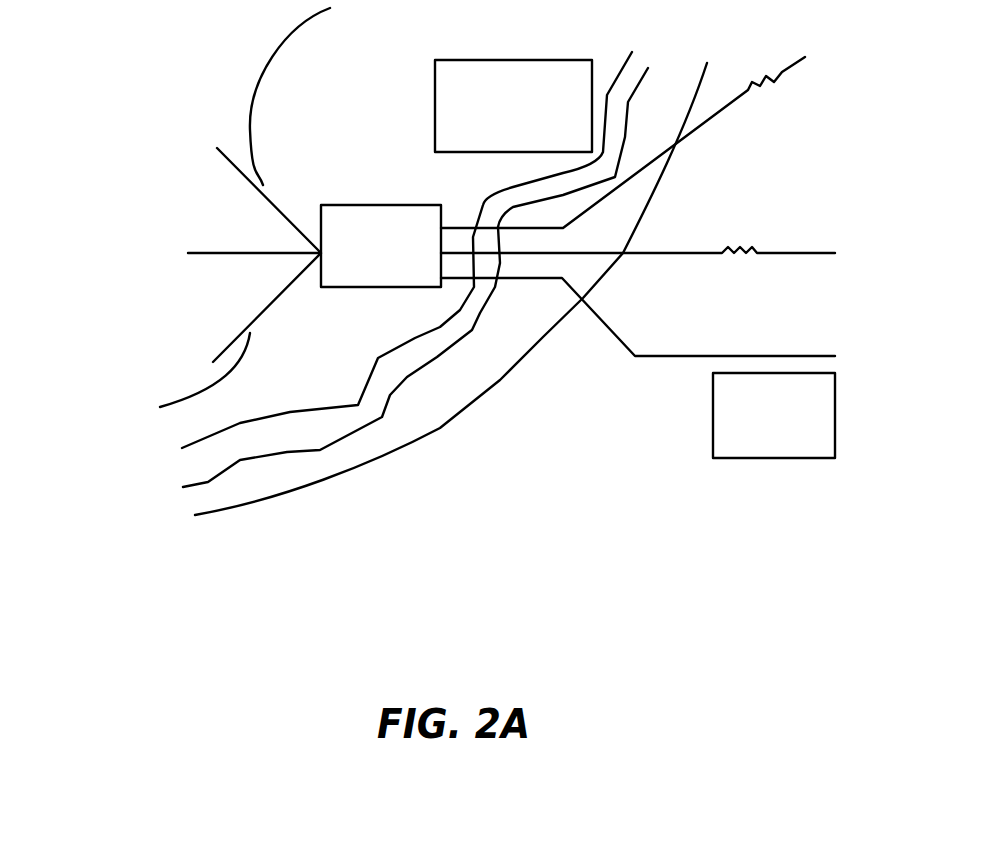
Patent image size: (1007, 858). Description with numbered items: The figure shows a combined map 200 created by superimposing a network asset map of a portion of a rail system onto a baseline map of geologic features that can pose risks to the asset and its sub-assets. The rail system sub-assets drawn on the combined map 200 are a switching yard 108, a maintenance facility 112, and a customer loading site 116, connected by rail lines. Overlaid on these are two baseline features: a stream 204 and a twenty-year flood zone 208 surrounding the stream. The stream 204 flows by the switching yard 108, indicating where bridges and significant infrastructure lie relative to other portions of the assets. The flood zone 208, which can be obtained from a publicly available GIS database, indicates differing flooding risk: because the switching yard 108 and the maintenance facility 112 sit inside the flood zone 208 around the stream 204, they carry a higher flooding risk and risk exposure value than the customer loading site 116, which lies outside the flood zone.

The combined map 200 is at (436, 332).
The switching yard 108 is at (381, 246).
The maintenance facility 112 is at (513, 106).
The customer loading site 116 is at (715, 460).
The stream 204 is at (195, 464).
The 20-year flood zone 208 is at (268, 385).